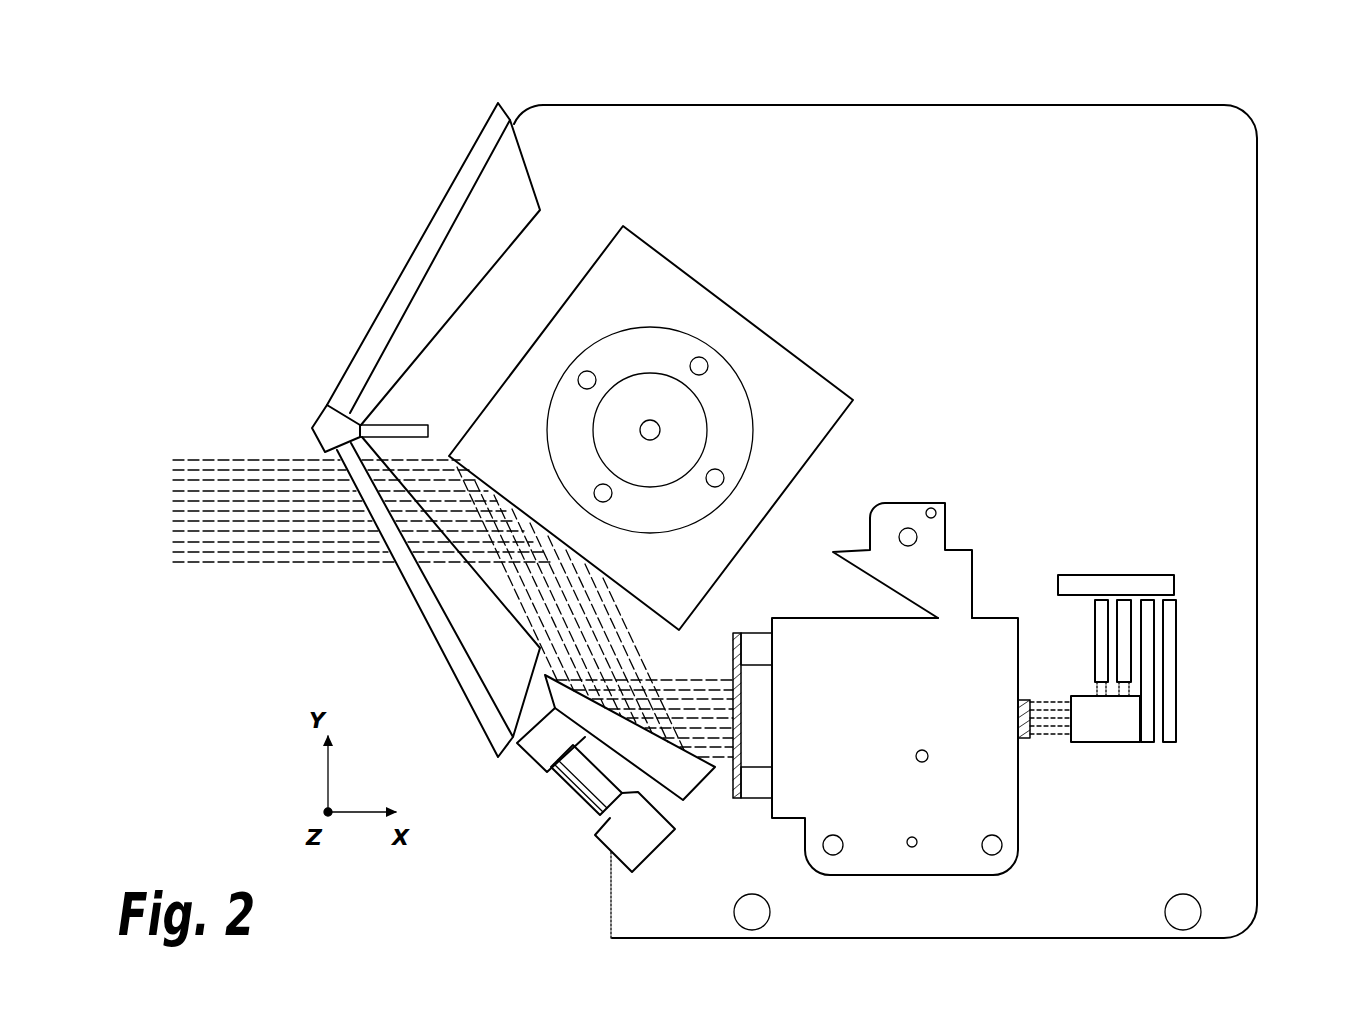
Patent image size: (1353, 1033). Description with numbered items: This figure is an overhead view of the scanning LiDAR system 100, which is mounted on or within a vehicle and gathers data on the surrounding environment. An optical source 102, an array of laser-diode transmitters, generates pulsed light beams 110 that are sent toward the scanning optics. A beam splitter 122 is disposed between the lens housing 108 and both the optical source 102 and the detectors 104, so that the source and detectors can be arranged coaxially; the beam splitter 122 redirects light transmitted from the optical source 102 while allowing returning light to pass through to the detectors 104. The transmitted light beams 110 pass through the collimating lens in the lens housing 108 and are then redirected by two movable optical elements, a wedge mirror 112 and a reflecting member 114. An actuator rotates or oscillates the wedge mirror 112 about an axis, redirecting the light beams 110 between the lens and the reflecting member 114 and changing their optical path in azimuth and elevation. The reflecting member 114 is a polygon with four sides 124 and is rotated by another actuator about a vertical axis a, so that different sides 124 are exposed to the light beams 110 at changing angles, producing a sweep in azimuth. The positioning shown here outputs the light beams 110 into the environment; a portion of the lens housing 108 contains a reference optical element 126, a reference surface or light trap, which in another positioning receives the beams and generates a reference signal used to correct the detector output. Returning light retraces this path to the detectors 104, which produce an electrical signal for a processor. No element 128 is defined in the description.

The scanning LiDAR system 100 is at (380, 160).
The optical source 102 is at (1098, 648).
The detectors 104 is at (1170, 715).
The lens housing 108 is at (1020, 831).
The light beam 110 is at (256, 456).
The wedge mirror 112 is at (642, 742).
The reflecting member 114 is at (790, 393).
The beam splitter 122 is at (1101, 742).
The sides 124 is at (577, 278).
The reference optical element 126 is at (960, 555).
The beam splitter plate 128 is at (400, 580).
The axis a is at (661, 428).